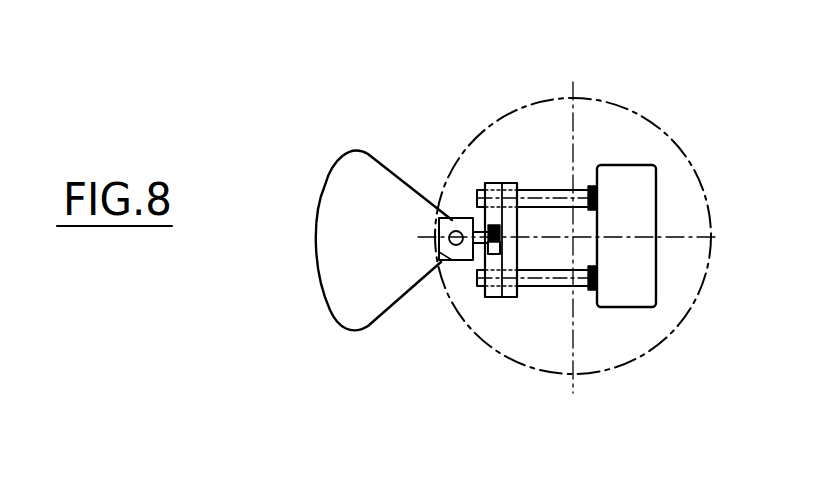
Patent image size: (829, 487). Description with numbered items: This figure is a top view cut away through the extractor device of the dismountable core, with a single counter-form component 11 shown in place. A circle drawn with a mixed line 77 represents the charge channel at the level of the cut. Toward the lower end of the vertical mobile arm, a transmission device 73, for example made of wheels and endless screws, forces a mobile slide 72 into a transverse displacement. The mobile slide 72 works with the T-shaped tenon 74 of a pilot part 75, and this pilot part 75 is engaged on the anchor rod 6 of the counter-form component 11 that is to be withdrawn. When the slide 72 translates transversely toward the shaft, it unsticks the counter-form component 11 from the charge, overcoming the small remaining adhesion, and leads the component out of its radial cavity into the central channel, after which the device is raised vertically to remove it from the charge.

The anchor rod 6 is at (453, 232).
The counter-form component 11 is at (348, 253).
The mobile slide 72 is at (505, 254).
The transmission device 73 is at (645, 270).
The tenon 74 is at (497, 183).
The pilot part 75 is at (438, 258).
The mixed line circle 77 is at (625, 102).